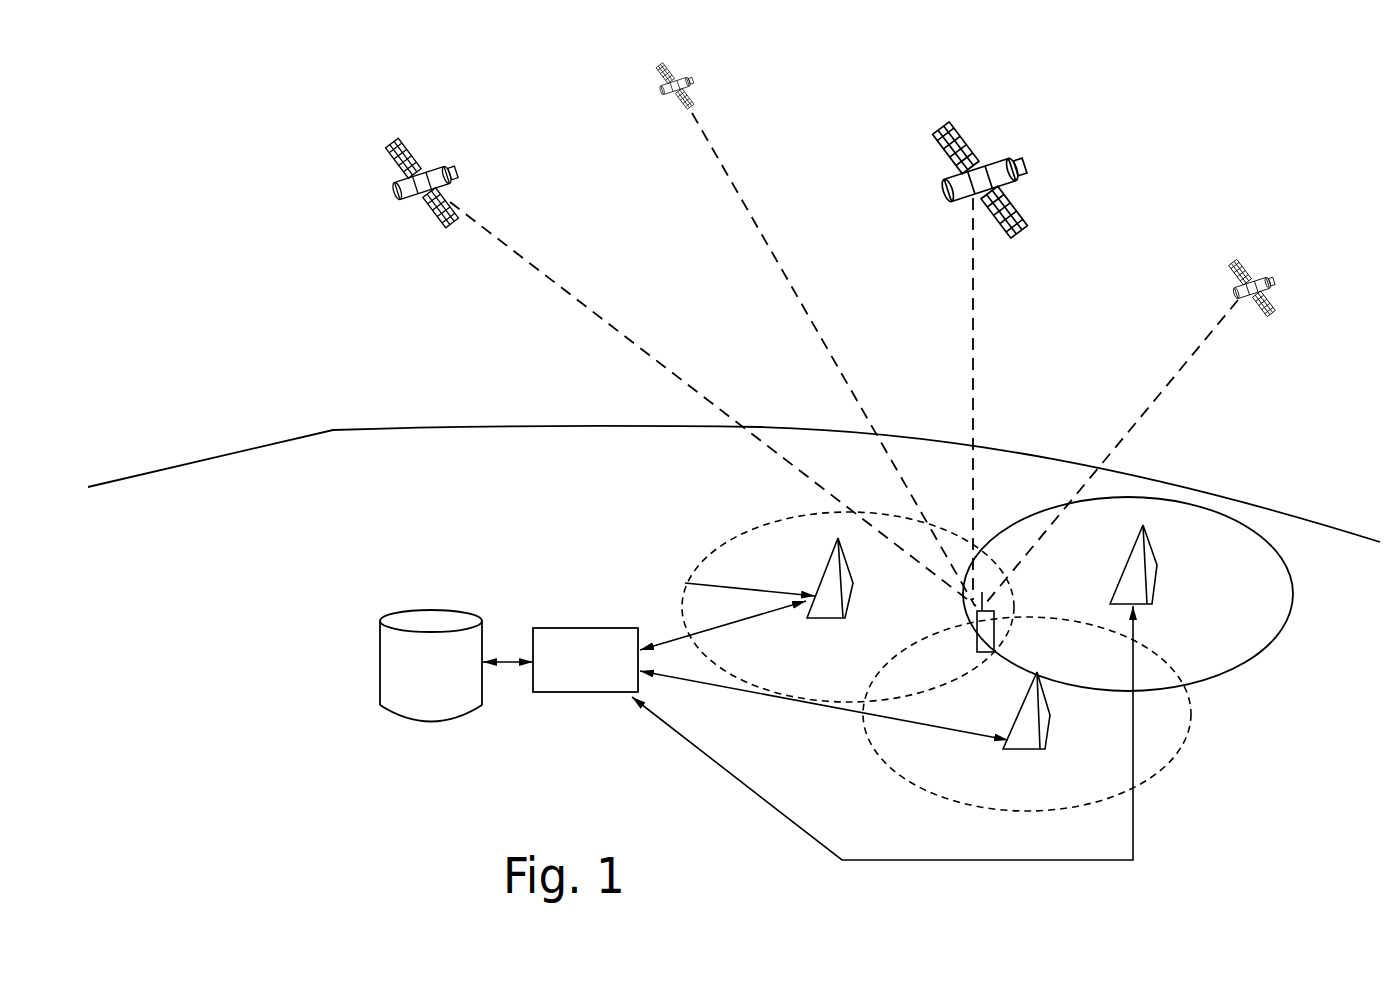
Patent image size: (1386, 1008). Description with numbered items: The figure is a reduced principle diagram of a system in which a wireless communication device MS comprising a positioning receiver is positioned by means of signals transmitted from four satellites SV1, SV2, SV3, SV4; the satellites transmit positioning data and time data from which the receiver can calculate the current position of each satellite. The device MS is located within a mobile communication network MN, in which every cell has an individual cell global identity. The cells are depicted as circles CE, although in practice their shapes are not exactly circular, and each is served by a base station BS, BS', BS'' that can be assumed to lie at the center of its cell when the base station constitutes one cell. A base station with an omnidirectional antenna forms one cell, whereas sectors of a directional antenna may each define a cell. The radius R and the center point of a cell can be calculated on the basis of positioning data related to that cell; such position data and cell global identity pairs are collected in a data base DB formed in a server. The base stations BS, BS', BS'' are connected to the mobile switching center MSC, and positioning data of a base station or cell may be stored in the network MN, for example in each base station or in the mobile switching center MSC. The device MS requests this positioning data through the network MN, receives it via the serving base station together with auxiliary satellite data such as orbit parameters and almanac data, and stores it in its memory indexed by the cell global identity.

The satellite SV1 is at (653, 360).
The satellite SV2 is at (801, 318).
The satellite SV3 is at (983, 347).
The satellite SV4 is at (1138, 411).
The mobile communication network MN is at (562, 540).
The data base DB is at (398, 618).
The mobile switching center MSC is at (808, 730).
The cell CE is at (714, 553).
The radius R is at (762, 588).
The base station BS' is at (809, 614).
The base station BS is at (1172, 584).
The base station BS'' is at (1023, 767).
The wireless communication device MS is at (994, 632).